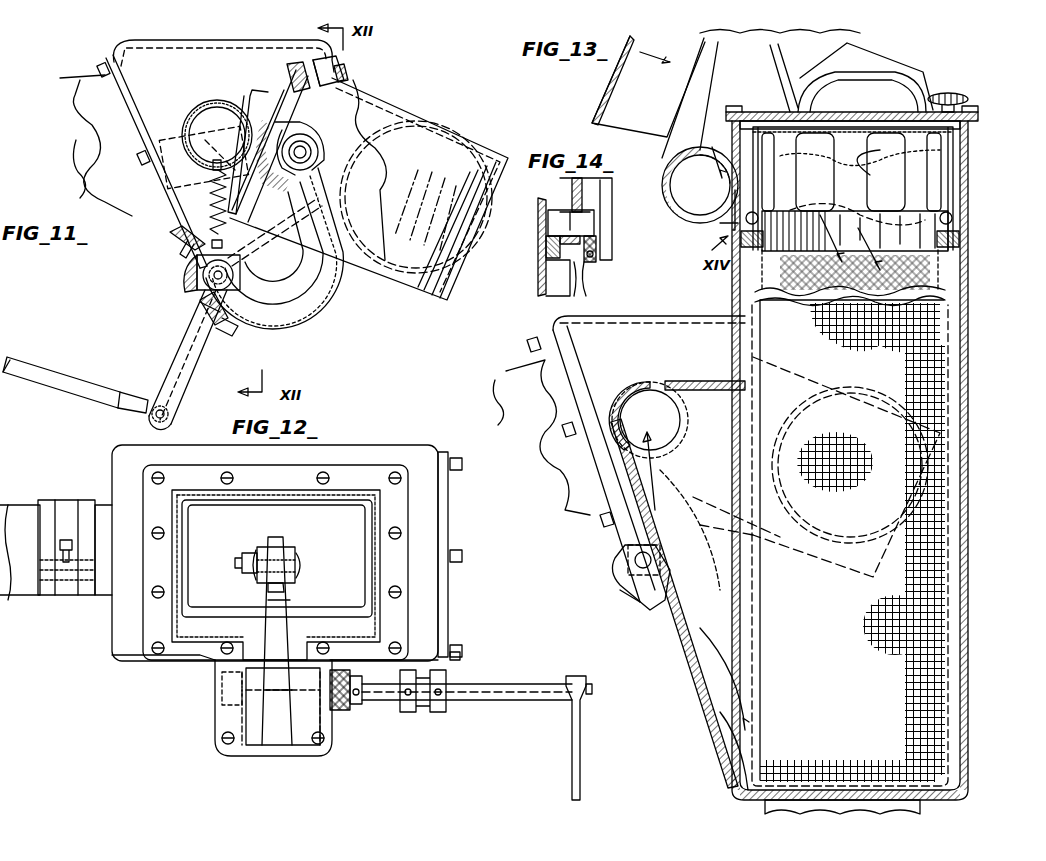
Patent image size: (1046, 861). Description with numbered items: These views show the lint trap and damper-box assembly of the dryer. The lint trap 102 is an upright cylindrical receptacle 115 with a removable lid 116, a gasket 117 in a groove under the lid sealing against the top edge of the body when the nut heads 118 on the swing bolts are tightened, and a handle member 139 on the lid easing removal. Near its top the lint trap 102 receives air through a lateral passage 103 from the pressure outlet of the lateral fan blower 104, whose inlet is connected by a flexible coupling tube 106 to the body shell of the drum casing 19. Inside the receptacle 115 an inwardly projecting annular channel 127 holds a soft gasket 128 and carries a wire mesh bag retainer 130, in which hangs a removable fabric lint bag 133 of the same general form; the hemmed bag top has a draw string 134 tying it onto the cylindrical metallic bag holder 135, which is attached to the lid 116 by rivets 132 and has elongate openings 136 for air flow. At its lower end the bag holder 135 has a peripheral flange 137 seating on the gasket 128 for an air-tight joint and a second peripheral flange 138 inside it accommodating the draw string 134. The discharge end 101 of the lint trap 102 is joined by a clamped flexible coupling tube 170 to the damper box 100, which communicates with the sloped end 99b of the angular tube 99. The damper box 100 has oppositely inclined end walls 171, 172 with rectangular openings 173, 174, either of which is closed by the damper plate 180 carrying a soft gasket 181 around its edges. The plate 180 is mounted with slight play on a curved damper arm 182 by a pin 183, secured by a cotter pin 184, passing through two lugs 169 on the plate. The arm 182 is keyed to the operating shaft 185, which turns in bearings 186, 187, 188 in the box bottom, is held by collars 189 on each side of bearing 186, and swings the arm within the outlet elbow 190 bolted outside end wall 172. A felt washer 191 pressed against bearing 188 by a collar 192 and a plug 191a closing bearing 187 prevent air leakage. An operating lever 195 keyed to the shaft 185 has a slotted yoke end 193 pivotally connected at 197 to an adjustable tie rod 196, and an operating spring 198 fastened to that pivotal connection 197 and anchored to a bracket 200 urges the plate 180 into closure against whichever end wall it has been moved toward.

In FIG. 13, the drum casing 19 is at (586, 112).
In FIG. 11, the angular tube 99 is at (76, 160).
In FIG. 13, the angular tube 99 is at (496, 404).
In FIG. 11, the sloped end of angular tube 99b is at (103, 110).
In FIG. 13, the sloped end of angular tube 99b is at (556, 462).
In FIG. 11, the damper box 100 is at (192, 50).
In FIG. 12, the damper box 100 is at (358, 442).
In FIG. 13, the damper box 100 is at (636, 463).
In FIG. 12, the passage (discharge end of lint trap) 101 is at (12, 518).
In FIG. 13, the passage (discharge end of lint trap) 101 is at (690, 620).
In FIG. 13, the lint trap 102 is at (975, 470).
In FIG. 13, the lateral passage 103 is at (750, 197).
In FIG. 13, the lateral fan blower 104 is at (816, 71).
In FIG. 13, the flexible coupling tube 106 is at (648, 86).
In FIG. 13, the cylindrical receptacle 115 is at (968, 362).
In FIG. 13, the removable lid 116 is at (975, 108).
In FIG. 13, the gasket 117 is at (978, 122).
In FIG. 13, the nut heads 118 is at (956, 95).
In FIG. 13, the annular channel 127 is at (952, 255).
In FIG. 14, the annular channel 127 is at (546, 264).
In FIG. 13, the soft gasket 128 is at (960, 244).
In FIG. 14, the soft gasket 128 is at (546, 240).
In FIG. 13, the wire mesh bag retainer 130 is at (950, 322).
In FIG. 14, the wire mesh bag retainer 130 is at (538, 282).
In FIG. 13, the rivets 132 is at (796, 136).
In FIG. 13, the fabric lint bag 133 is at (950, 296).
In FIG. 14, the fabric lint bag 133 is at (586, 284).
In FIG. 13, the draw string 134 is at (920, 240).
In FIG. 14, the draw string 134 is at (596, 246).
In FIG. 13, the bag holder 135 is at (960, 190).
In FIG. 14, the bag holder 135 is at (606, 210).
In FIG. 13, the elongate openings 136 is at (880, 160).
In FIG. 13, the peripheral flange 137 is at (955, 222).
In FIG. 14, the peripheral flange 137 is at (555, 212).
In FIG. 13, the second peripheral flange 138 is at (857, 252).
In FIG. 14, the second peripheral flange 138 is at (598, 254).
In FIG. 13, the handle member 139 is at (842, 92).
In FIG. 11, the lugs 169 is at (316, 148).
In FIG. 12, the lugs 169 is at (266, 545).
In FIG. 12, the clamped flexible coupling tube 170 is at (86, 490).
In FIG. 13, the clamped flexible coupling tube 170 is at (648, 420).
In FIG. 11, the end wall 171 is at (130, 61).
In FIG. 11, the end wall 172 is at (313, 64).
In FIG. 12, the end wall 172 is at (422, 598).
In FIG. 11, the rectangular opening 173 is at (140, 94).
In FIG. 11, the rectangular opening 174 is at (258, 88).
In FIG. 12, the rectangular opening 174 is at (378, 568).
In FIG. 11, the damper plate 180 is at (268, 128).
In FIG. 12, the damper plate 180 is at (356, 548).
In FIG. 11, the soft gasket 181 is at (262, 70).
In FIG. 11, the curved damper arm 182 is at (300, 300).
In FIG. 12, the curved damper arm 182 is at (282, 600).
In FIG. 11, the pin 183 is at (312, 163).
In FIG. 12, the pin 183 is at (298, 562).
In FIG. 11, the cotter pin 184 is at (307, 145).
In FIG. 12, the cotter pin 184 is at (244, 566).
In FIG. 11, the operating shaft 185 is at (238, 262).
In FIG. 12, the operating shaft 185 is at (518, 686).
In FIG. 12, the bearing 186 is at (422, 712).
In FIG. 12, the bearing 187 is at (220, 706).
In FIG. 12, the bearing 188 is at (328, 730).
In FIG. 12, the collars 189 is at (428, 668).
In FIG. 11, the outlet elbow 190 is at (438, 118).
In FIG. 12, the outlet elbow 190 is at (388, 510).
In FIG. 11, the felt washer 191 is at (200, 285).
In FIG. 12, the felt washer 191 is at (340, 712).
In FIG. 12, the plug 191a is at (222, 692).
In FIG. 12, the collar 192 is at (364, 706).
In FIG. 11, the slotted yoke end 193 is at (182, 388).
In FIG. 11, the operating lever 195 is at (186, 342).
In FIG. 12, the operating lever 195 is at (572, 728).
In FIG. 11, the adjustable tie rod 196 is at (58, 372).
In FIG. 11, the pivotal connection 197 is at (148, 425).
In FIG. 11, the operating spring 198 is at (178, 246).
In FIG. 11, the bracket 200 is at (194, 190).